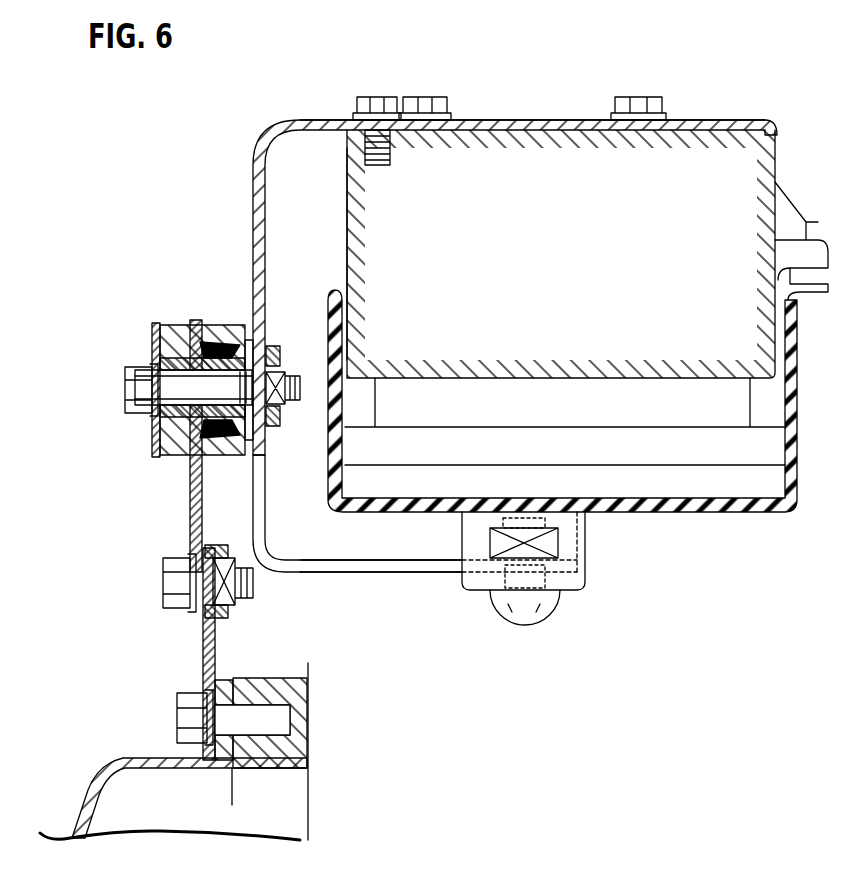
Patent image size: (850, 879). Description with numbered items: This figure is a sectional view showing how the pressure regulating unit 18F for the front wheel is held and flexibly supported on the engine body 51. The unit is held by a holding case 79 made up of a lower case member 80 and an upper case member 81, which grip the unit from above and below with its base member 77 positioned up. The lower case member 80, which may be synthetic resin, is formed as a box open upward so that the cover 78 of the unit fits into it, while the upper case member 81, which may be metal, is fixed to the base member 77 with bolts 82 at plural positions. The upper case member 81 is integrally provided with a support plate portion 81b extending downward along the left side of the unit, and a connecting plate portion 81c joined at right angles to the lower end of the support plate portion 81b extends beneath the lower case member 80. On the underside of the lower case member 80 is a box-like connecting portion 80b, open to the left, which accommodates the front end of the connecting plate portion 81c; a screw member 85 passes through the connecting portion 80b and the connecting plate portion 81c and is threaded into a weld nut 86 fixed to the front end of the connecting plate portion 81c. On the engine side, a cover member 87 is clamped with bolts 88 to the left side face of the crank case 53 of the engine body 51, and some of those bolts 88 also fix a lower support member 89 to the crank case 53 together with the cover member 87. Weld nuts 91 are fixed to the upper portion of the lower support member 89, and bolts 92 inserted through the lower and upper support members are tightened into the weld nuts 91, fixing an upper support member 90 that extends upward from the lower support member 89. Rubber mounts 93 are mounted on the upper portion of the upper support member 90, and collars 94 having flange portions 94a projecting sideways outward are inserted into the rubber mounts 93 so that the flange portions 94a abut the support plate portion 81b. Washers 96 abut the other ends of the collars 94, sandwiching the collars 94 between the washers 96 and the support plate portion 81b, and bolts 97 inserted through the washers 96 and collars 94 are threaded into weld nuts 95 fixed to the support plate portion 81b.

The pressure regulating unit for the front wheel 18F is at (343, 222).
The engine body 51 is at (292, 670).
The crank case 53 is at (305, 710).
The base member 77 is at (552, 248).
The cover 78 is at (575, 412).
The holding case 79 is at (250, 210).
The lower case member 80 is at (622, 510).
The box-like connecting portion 80b is at (577, 585).
The upper case member 81 is at (512, 120).
The support plate portion 81b is at (256, 248).
The connecting plate portion 81c is at (412, 568).
The bolts 82 is at (415, 97).
The screw member 85 is at (525, 612).
The weld nut 86 is at (553, 520).
The cover member 87 is at (98, 786).
The bolts 88 is at (180, 720).
The lower support member 89 is at (205, 650).
The upper support member 90 is at (190, 504).
The weld nuts 91 is at (228, 608).
The bolts 92 is at (168, 584).
The rubber mounts 93 is at (168, 330).
The collars 94 is at (228, 345).
The flange portions 94a is at (265, 348).
The weld nuts 95 is at (278, 405).
The washers 96 is at (152, 336).
The bolts 97 is at (135, 386).